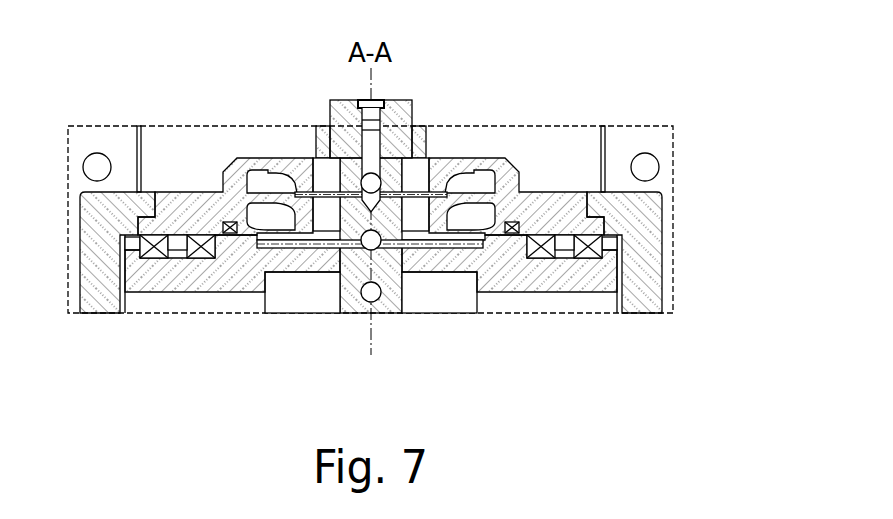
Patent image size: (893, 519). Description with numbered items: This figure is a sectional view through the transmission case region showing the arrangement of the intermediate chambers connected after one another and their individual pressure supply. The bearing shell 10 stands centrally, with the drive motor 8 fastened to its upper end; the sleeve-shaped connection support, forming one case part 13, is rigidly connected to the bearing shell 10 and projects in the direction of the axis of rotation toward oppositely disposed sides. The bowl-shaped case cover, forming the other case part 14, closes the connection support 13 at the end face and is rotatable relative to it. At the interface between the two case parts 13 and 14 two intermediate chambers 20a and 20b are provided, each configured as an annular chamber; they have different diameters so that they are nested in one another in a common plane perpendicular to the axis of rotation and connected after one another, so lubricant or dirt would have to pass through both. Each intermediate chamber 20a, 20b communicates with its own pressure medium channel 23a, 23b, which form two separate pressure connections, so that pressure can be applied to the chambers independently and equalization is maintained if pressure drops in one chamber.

The bearing shell 10 is at (340, 110).
The pressure medium channel 23a is at (388, 193).
The intermediate chamber 20a is at (478, 182).
The intermediate chamber 20b is at (477, 218).
The case part 14 is at (647, 250).
The case part 13 is at (498, 280).
The drive motor 8 is at (541, 268).
The pressure medium channel 23b is at (442, 248).